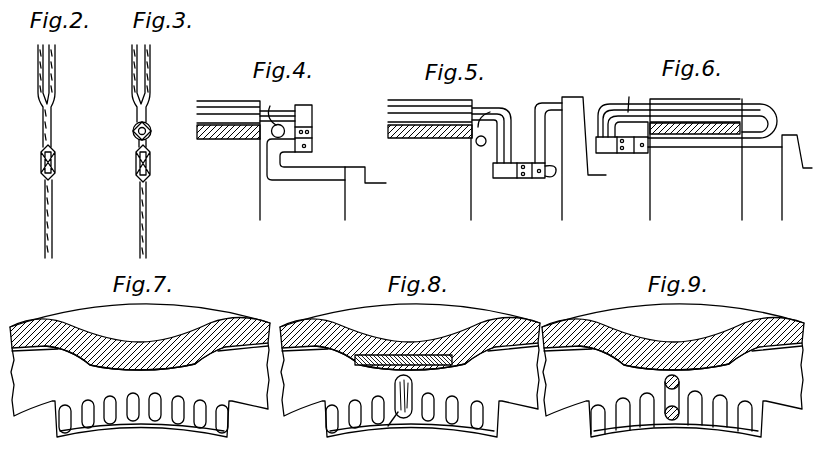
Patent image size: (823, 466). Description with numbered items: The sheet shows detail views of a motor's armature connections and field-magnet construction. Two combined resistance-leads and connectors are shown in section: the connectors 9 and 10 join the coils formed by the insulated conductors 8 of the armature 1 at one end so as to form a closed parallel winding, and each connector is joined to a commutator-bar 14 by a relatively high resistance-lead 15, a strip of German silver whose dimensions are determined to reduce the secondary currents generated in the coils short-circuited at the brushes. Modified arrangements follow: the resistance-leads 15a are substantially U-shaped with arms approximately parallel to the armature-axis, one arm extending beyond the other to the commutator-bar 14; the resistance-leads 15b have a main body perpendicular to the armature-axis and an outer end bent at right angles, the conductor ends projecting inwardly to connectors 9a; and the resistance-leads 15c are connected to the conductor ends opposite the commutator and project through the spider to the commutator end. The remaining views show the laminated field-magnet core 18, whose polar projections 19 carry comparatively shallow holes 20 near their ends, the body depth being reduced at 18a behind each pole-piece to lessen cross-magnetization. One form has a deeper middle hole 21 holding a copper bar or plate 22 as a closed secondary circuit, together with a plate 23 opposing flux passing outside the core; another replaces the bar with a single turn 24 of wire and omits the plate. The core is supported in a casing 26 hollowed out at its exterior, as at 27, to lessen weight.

In FIG. 4, the armature 1 is at (228, 160).
In FIG. 5, the armature 1 is at (430, 160).
In FIG. 6, the armature 1 is at (696, 159).
In FIG. 4, the insulated conductors 8 is at (276, 123).
In FIG. 5, the insulated conductors 8 is at (483, 129).
In FIG. 6, the insulated conductors 8 is at (629, 97).
In FIG. 2, the connector 9 is at (56, 96).
In FIG. 4, the connector 9 is at (317, 118).
In FIG. 5, the connector 9a is at (514, 180).
In FIG. 6, the connector 9a is at (612, 155).
In FIG. 3, the connector 10 is at (155, 96).
In FIG. 4, the commutator-bar 14 is at (365, 193).
In FIG. 5, the commutator-bar 14 is at (584, 158).
In FIG. 6, the commutator-bar 14 is at (797, 177).
In FIG. 2, the resistance-lead 15 is at (54, 236).
In FIG. 3, the resistance-lead 15 is at (148, 236).
In FIG. 4, the resistance-lead 15a is at (302, 183).
In FIG. 5, the resistance-lead 15b is at (549, 180).
In FIG. 6, the resistance-lead 15c is at (696, 150).
In FIG. 7, the field-magnet core 18 is at (140, 390).
In FIG. 8, the field-magnet core 18 is at (410, 390).
In FIG. 9, the field-magnet core 18 is at (673, 390).
In FIG. 7, the reduced body portion 18a is at (115, 369).
In FIG. 8, the reduced body portion 18a is at (405, 367).
In FIG. 9, the reduced body portion 18a is at (669, 367).
In FIG. 7, the polar projection 19 is at (230, 423).
In FIG. 8, the polar projection 19 is at (429, 428).
In FIG. 9, the polar projection 19 is at (693, 428).
In FIG. 7, the holes 20 is at (135, 398).
In FIG. 8, the holes 20 is at (404, 402).
In FIG. 9, the holes 20 is at (671, 404).
In FIG. 8, the hole 21 is at (385, 430).
In FIG. 8, the bar or plate 22 is at (412, 412).
In FIG. 8, the plate 23 is at (419, 364).
In FIG. 9, the single turn of wire 24 is at (686, 395).
In FIG. 7, the casing 26 is at (250, 321).
In FIG. 8, the casing 26 is at (410, 311).
In FIG. 9, the casing 26 is at (673, 311).
In FIG. 7, the hollowed-out exterior 27 is at (140, 343).
In FIG. 8, the hollowed-out exterior 27 is at (410, 343).
In FIG. 9, the hollowed-out exterior 27 is at (673, 343).